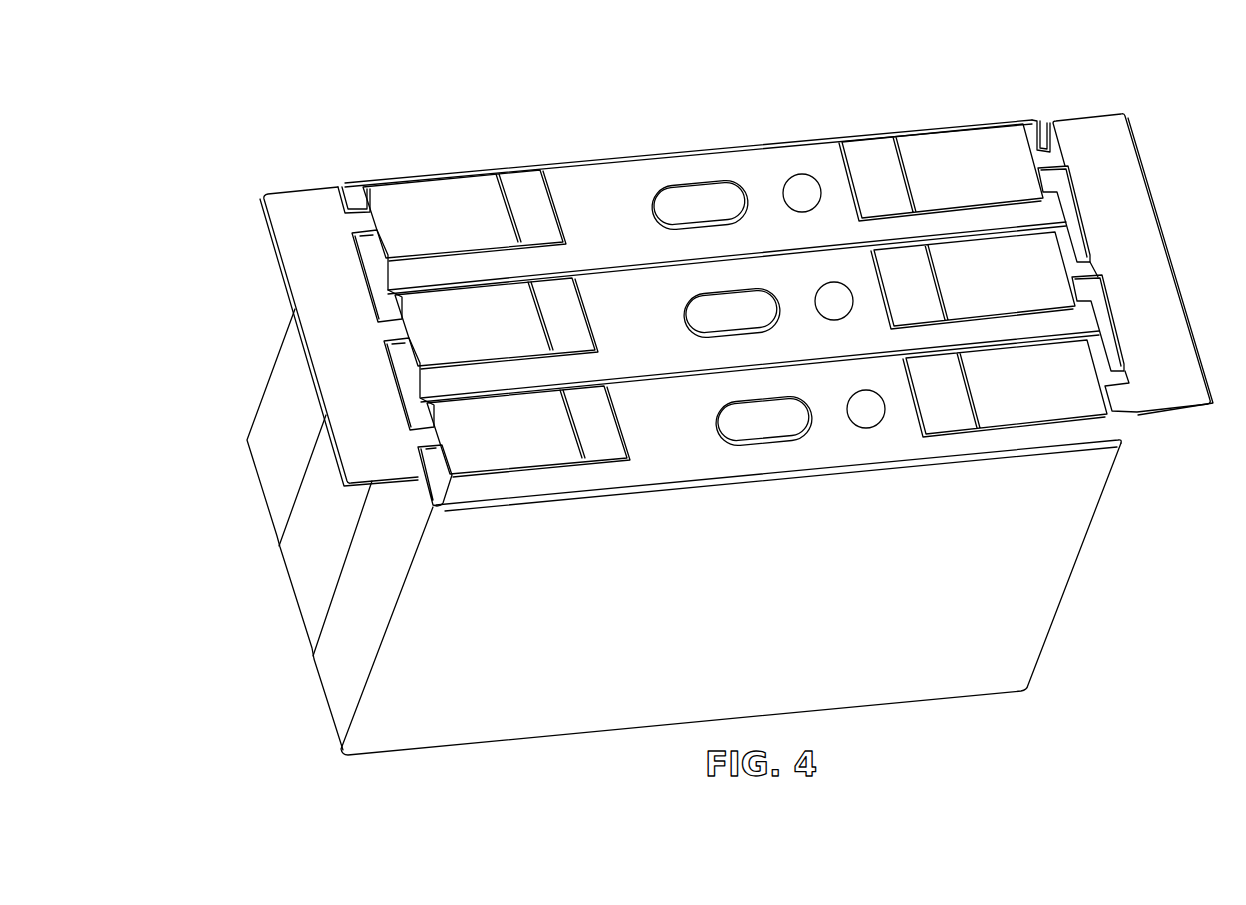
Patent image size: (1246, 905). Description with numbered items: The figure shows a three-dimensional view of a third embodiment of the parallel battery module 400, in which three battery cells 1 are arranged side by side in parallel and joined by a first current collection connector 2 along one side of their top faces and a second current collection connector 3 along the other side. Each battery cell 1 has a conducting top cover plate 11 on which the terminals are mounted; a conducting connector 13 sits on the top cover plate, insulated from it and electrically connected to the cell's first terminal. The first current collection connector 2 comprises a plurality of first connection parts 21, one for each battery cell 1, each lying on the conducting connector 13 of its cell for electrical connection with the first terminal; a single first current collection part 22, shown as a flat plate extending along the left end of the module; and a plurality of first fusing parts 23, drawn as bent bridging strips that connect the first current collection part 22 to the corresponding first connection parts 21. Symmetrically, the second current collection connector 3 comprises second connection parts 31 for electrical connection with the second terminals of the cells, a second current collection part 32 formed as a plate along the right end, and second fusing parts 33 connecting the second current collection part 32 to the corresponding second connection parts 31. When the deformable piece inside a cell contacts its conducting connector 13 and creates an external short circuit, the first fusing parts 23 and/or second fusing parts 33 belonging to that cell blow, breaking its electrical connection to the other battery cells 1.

The battery module 400 is at (195, 82).
The battery cell 1 is at (268, 492).
The first current collection connector 2 is at (267, 137).
The second current collection connector 3 is at (1127, 77).
The conducting top cover plate 11 is at (693, 172).
The conducting connector 13 is at (542, 207).
The first connection part 21 is at (393, 193).
The first current collection part 22 is at (300, 200).
The first fusing part 23 is at (358, 218).
The second connection part 31 is at (990, 145).
The second current collection part 32 is at (1083, 133).
The second fusing part 33 is at (1050, 157).